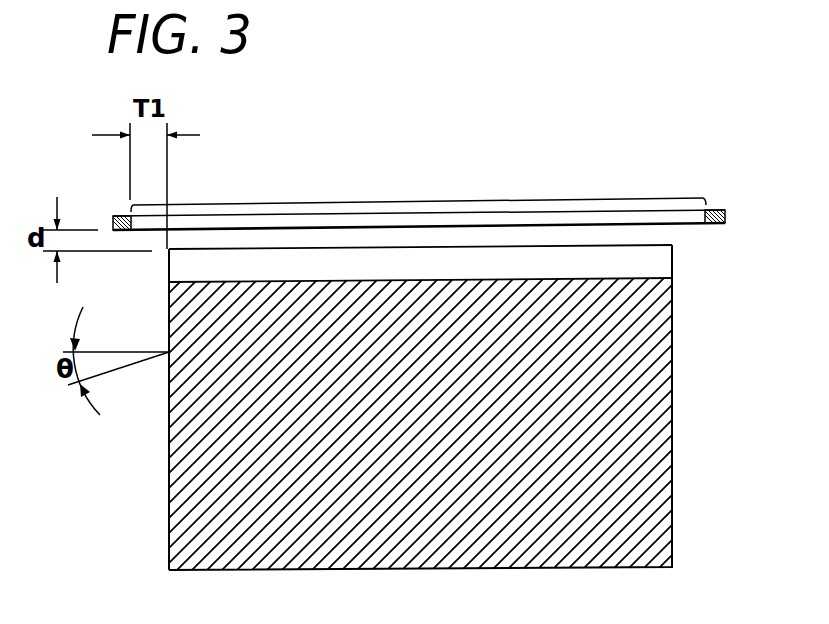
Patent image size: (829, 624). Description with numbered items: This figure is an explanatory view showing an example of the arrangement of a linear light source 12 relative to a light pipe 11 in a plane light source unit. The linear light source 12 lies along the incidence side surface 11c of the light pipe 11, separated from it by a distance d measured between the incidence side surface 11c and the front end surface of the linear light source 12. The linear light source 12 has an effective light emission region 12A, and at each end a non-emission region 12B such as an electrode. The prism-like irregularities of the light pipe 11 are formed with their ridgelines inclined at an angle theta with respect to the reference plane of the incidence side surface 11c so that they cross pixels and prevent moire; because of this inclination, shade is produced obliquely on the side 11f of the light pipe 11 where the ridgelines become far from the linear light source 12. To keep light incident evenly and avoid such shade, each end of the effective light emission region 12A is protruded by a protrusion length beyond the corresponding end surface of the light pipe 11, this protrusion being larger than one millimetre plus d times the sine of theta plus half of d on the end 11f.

The light pipe 11 is at (414, 426).
The incidence side surface 11c is at (671, 241).
The side of the light pipe 11f is at (168, 430).
The linear light source 12 is at (404, 184).
The effective light emission region 12A is at (424, 202).
The non-emission region 12B is at (116, 216).